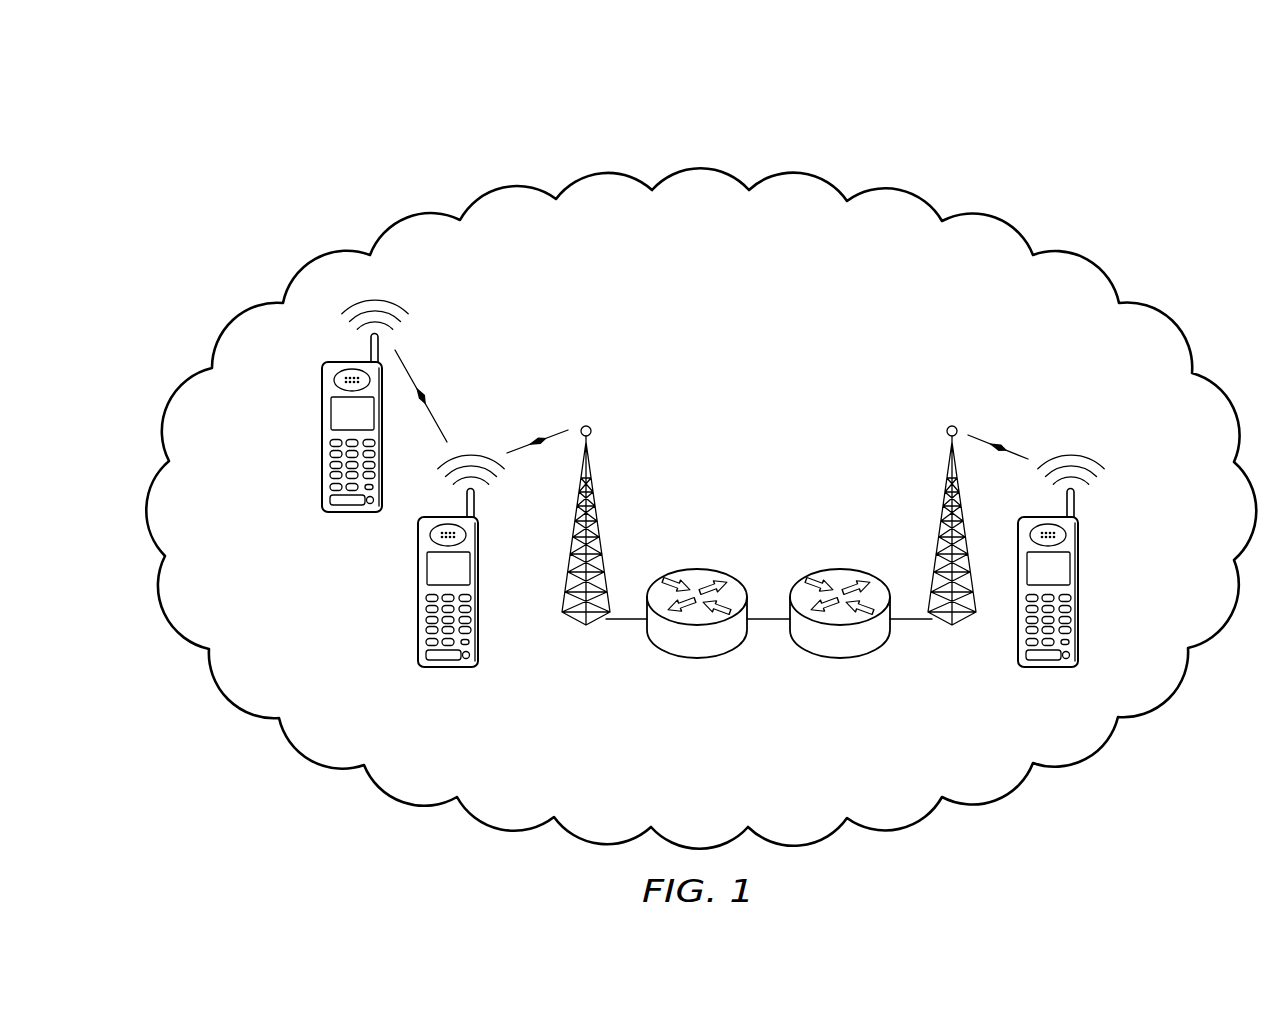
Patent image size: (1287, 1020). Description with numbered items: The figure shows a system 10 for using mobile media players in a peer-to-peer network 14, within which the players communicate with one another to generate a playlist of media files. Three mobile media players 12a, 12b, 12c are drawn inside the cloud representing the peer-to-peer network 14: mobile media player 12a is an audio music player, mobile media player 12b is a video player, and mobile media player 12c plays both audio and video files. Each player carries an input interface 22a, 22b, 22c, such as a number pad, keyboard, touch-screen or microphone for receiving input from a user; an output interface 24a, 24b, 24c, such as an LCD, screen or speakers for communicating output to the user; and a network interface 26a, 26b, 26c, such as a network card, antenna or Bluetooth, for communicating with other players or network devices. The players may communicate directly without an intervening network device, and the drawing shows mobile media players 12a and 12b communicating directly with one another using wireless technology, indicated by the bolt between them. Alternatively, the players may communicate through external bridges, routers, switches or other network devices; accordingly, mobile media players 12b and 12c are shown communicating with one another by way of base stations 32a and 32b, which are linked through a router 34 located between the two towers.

The system 10 is at (840, 125).
The peer-to-peer network 14 is at (496, 178).
The mobile media player 12a is at (331, 406).
The mobile media player 12b is at (450, 588).
The mobile media player 12c is at (1082, 588).
The input interface 22a is at (316, 473).
The input interface 22b is at (412, 628).
The input interface 22c is at (1085, 628).
The output interface 24a is at (316, 411).
The output interface 24b is at (412, 565).
The output interface 24c is at (1085, 565).
The network interface 26a is at (355, 331).
The network interface 26b is at (492, 486).
The network interface 26c is at (1092, 486).
The base station 32a is at (604, 520).
The base station 32b is at (934, 520).
The router 34 is at (695, 659).